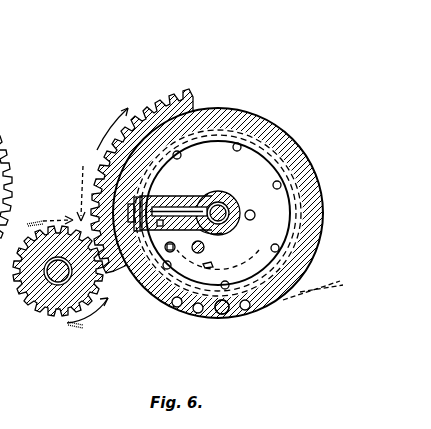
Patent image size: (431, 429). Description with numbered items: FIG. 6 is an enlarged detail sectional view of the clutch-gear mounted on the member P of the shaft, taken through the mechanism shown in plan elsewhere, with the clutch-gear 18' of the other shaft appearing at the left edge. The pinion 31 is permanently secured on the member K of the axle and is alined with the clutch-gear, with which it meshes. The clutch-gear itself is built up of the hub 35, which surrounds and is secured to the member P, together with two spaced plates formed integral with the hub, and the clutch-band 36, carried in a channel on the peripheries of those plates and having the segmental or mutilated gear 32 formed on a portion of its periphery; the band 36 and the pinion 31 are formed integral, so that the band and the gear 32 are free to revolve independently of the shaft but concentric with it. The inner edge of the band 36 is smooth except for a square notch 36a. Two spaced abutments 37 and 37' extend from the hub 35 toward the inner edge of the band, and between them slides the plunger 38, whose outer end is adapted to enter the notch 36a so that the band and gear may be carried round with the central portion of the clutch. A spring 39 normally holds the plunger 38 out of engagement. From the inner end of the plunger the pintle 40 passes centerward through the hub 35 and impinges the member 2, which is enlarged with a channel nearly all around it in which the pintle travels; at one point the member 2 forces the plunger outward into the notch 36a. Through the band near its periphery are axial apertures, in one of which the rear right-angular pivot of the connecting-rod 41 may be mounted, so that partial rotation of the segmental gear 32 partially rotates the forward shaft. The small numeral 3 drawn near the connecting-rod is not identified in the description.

The clutch-gear 18' is at (15, 178).
The segmental or mutilated gear 32 is at (150, 110).
The abutment 37 is at (128, 156).
The square notch 36a is at (135, 200).
The clutch-band 36 is at (283, 132).
The shaft member P is at (208, 198).
The hub 35 is at (217, 195).
The plunger 38 is at (150, 204).
The pintle 40 is at (190, 208).
The member 2 is at (220, 228).
The spring 39 is at (200, 259).
The abutment 37' is at (99, 302).
The line 3 is at (334, 278).
The connecting-rod 41 is at (313, 292).
The axle member K is at (38, 303).
The pinion 31 is at (53, 313).